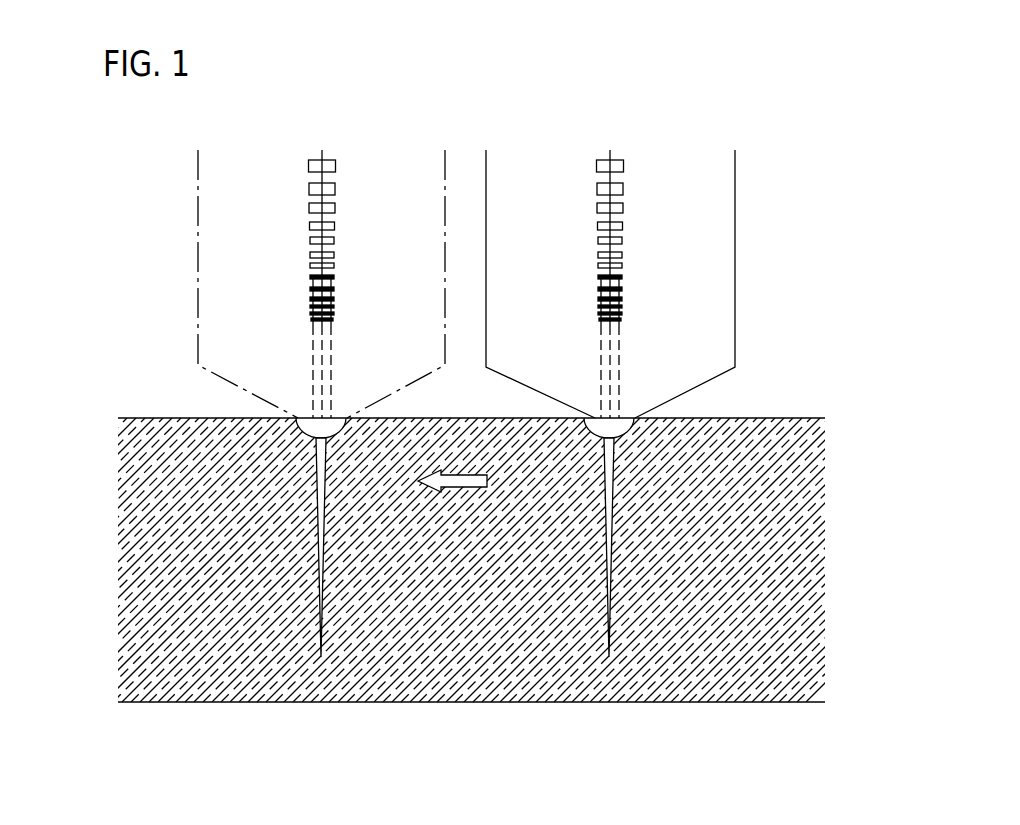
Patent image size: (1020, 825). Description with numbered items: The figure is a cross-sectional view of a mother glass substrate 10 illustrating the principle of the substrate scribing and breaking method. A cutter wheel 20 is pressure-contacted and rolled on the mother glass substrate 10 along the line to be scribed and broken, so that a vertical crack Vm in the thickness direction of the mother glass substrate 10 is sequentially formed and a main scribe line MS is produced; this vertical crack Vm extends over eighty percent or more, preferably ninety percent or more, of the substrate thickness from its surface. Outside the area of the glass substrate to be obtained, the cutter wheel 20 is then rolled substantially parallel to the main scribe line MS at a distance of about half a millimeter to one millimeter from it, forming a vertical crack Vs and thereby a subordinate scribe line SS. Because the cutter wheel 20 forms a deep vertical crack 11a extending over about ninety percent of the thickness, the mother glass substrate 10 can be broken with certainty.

The mother glass substrate 10 is at (790, 418).
The cutter wheel 20 is at (210, 217).
The main scribe line MS is at (299, 418).
The subordinate scribe line SS is at (632, 418).
The vertical crack Vm is at (317, 507).
The vertical crack Vs is at (617, 505).
The deep vertical crack 11a is at (464, 537).